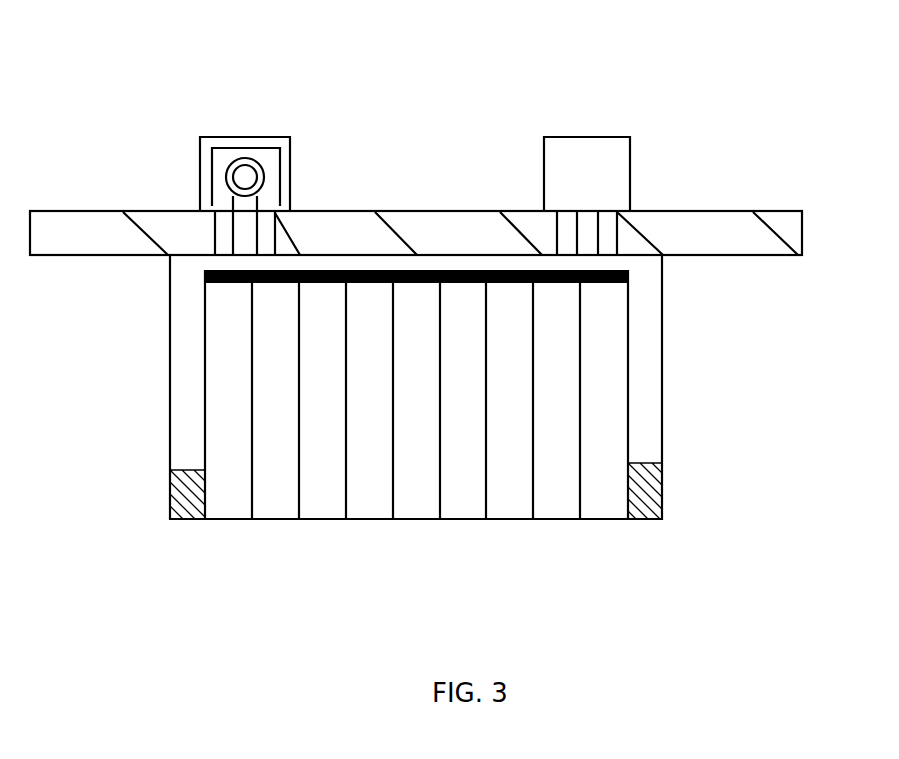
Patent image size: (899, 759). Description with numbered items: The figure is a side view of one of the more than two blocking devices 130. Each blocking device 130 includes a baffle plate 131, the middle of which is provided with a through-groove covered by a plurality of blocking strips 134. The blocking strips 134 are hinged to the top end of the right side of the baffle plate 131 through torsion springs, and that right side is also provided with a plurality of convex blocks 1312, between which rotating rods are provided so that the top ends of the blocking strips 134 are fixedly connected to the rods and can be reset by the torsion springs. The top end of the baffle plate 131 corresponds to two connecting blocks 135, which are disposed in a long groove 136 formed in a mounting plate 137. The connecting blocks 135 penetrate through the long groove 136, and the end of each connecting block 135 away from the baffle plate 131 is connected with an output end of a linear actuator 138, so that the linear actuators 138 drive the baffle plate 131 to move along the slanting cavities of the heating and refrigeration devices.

The blocking device 130 is at (405, 155).
The baffle plate 131 is at (187, 397).
The convex block 1312 is at (170, 513).
The blocking strip 134 is at (217, 328).
The connecting block 135 is at (247, 243).
The long groove 136 is at (603, 227).
The mounting plate 137 is at (672, 227).
The linear actuator 138 is at (287, 158).